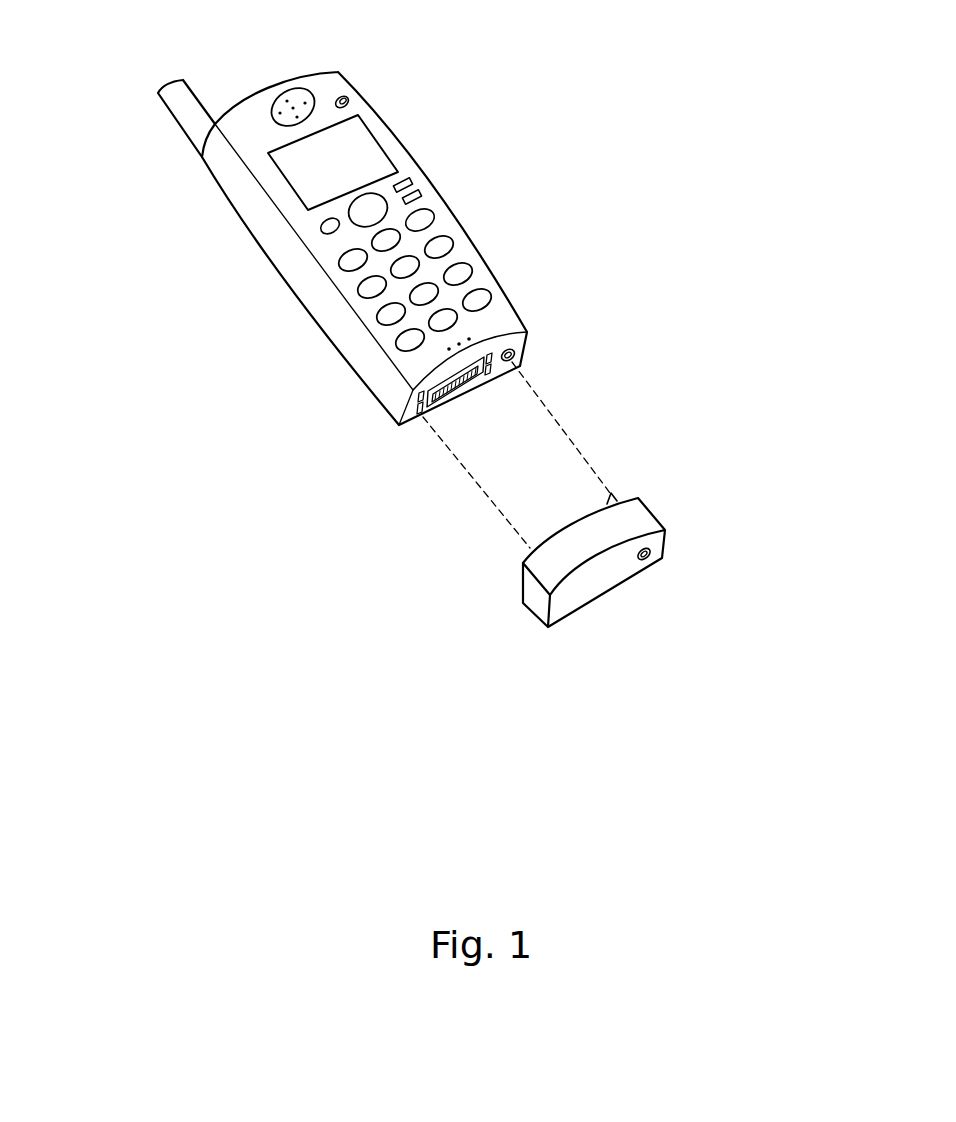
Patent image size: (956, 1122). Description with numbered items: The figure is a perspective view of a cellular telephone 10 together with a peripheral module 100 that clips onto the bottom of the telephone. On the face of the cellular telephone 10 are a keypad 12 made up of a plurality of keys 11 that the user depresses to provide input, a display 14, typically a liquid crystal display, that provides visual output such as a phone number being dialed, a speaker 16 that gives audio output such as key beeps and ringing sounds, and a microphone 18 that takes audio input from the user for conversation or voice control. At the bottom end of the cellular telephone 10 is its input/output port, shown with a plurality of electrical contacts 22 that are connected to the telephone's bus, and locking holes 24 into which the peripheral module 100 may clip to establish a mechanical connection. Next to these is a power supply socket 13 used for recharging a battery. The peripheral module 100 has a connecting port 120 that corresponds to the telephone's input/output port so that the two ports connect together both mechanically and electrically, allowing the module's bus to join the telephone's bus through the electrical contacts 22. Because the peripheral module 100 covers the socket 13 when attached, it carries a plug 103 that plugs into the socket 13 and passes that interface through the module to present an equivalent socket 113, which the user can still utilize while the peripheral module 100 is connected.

The cellular telephone 10 is at (192, 202).
The keys 11 is at (350, 98).
The keypad 12 is at (458, 252).
The power supply socket 13 is at (514, 356).
The display 14 is at (373, 157).
The speaker 16 is at (283, 98).
The microphone 18 is at (440, 351).
The electrical contacts 22 is at (470, 381).
The locking holes 24 is at (422, 412).
The peripheral module 100 is at (667, 503).
The plug 103 is at (612, 493).
The equivalent socket 113 is at (649, 558).
The connecting port 120 is at (535, 532).